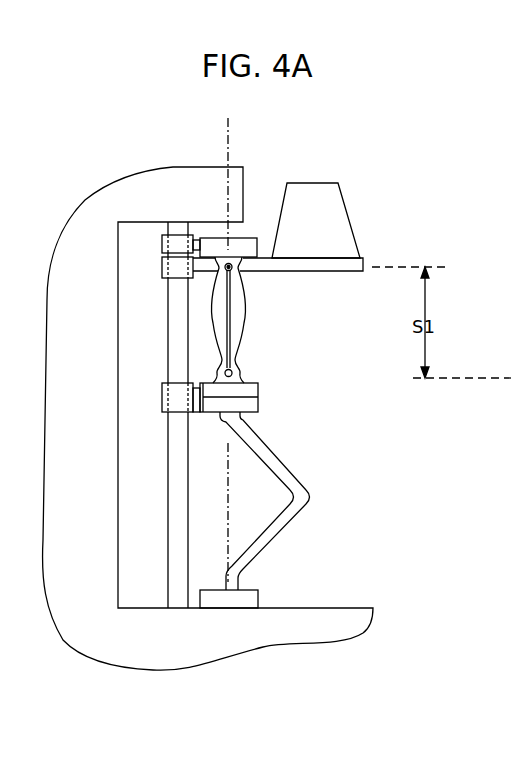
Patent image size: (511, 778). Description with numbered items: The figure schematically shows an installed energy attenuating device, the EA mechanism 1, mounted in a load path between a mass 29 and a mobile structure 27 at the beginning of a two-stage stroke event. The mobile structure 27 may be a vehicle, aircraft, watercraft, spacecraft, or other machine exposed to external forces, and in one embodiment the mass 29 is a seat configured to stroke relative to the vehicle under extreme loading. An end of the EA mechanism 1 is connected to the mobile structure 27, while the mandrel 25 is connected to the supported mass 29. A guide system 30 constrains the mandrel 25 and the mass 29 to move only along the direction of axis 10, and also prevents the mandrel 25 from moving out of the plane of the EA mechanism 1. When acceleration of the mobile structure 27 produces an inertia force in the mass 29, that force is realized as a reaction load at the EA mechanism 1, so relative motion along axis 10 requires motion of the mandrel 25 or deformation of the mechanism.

The EA mechanism 1 is at (325, 435).
The axis 10 is at (228, 148).
The mandrel 25 is at (232, 270).
The mobile structure 27 is at (320, 608).
The mass 29 is at (348, 207).
The guide system 30 is at (168, 328).